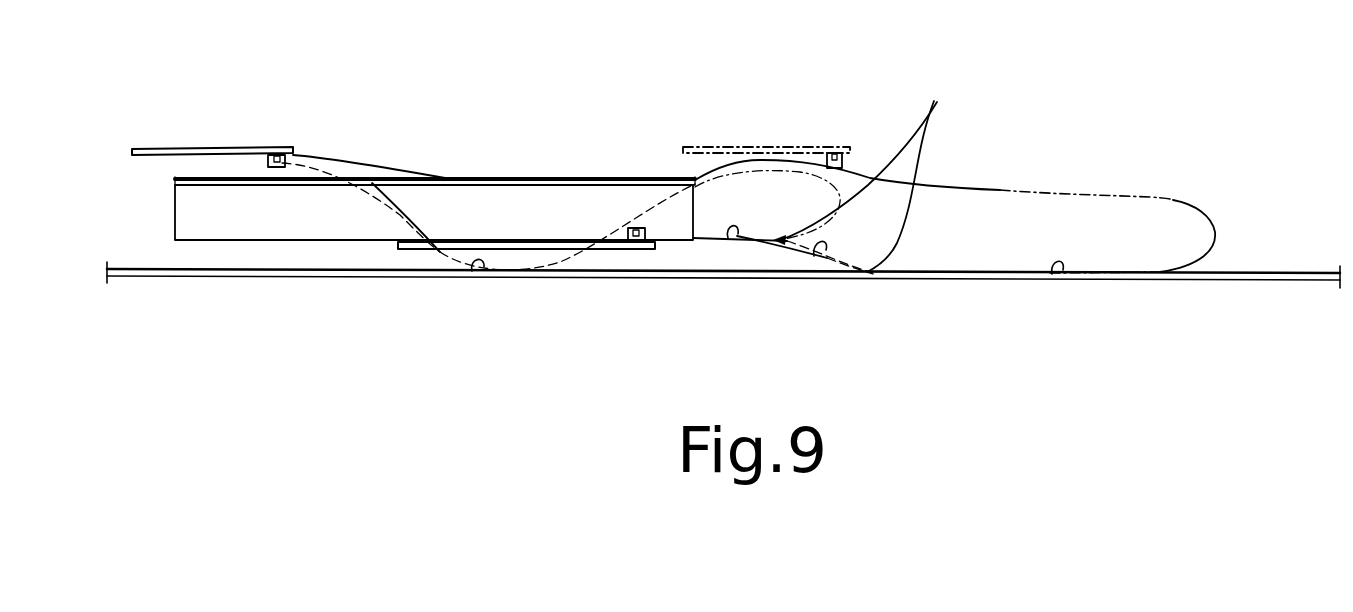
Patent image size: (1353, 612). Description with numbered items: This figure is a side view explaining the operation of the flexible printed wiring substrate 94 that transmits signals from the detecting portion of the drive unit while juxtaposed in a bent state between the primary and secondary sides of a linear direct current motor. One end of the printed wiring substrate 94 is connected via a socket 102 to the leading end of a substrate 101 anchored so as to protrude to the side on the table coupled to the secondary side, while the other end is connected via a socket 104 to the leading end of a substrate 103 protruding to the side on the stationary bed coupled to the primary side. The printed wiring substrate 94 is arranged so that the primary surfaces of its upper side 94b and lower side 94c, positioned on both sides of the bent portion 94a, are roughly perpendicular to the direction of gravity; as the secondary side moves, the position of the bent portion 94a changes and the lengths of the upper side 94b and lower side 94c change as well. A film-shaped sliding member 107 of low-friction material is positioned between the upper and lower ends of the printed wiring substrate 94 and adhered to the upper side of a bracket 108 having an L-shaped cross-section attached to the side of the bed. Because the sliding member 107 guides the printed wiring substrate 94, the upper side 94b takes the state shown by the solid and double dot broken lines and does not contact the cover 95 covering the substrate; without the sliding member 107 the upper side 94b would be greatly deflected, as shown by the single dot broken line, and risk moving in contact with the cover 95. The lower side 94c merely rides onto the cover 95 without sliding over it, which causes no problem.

The flexible printed wiring substrate 94 is at (410, 205).
The bent portion 94a is at (1273, 203).
The upper side 94b is at (512, 177).
The lower side 94c is at (477, 270).
The cover 95 is at (348, 275).
The substrate 101 is at (225, 147).
The socket 102 is at (277, 153).
The substrate 103 is at (600, 243).
The socket 104 is at (637, 243).
The sliding member 107 is at (193, 177).
The bracket 108 is at (183, 215).